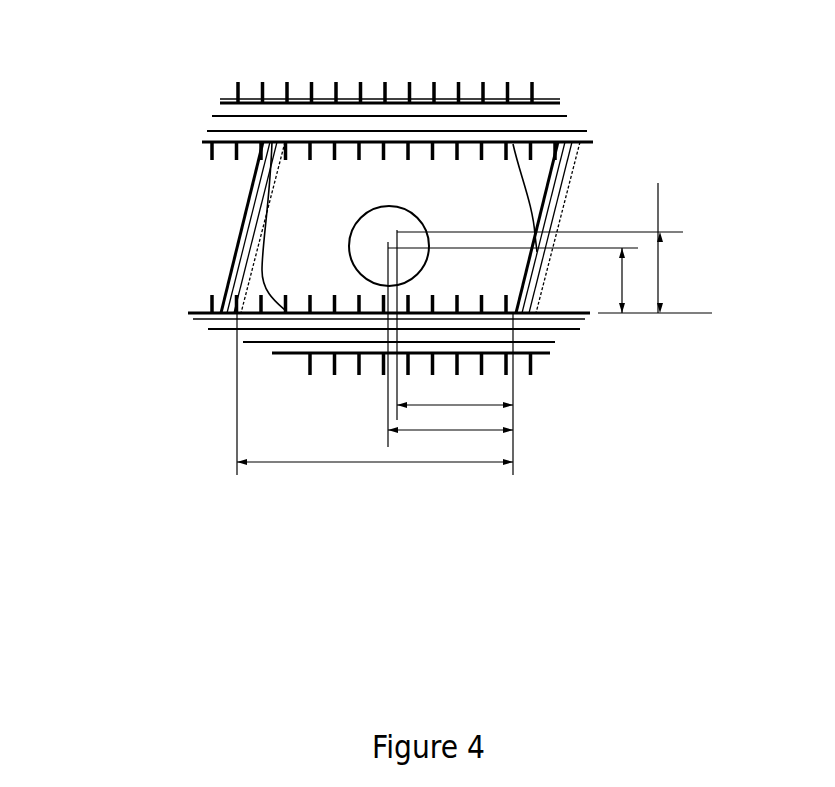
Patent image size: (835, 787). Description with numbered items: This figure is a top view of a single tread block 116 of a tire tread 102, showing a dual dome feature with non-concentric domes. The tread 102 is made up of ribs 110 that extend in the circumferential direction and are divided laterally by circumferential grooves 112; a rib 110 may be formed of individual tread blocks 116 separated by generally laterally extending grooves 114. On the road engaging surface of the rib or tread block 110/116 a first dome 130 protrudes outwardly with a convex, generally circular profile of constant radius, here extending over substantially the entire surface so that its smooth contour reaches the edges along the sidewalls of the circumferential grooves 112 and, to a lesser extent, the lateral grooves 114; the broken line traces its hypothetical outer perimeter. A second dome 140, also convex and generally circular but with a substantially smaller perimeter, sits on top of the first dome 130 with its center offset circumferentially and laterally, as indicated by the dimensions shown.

The tire tread 102 is at (108, 274).
The rib 110 is at (547, 83).
The tread block 116 is at (471, 251).
The circumferential groove 112 is at (567, 122).
The lateral groove 114 is at (272, 142).
The first dome 130 is at (263, 273).
The second dome 140 is at (427, 215).